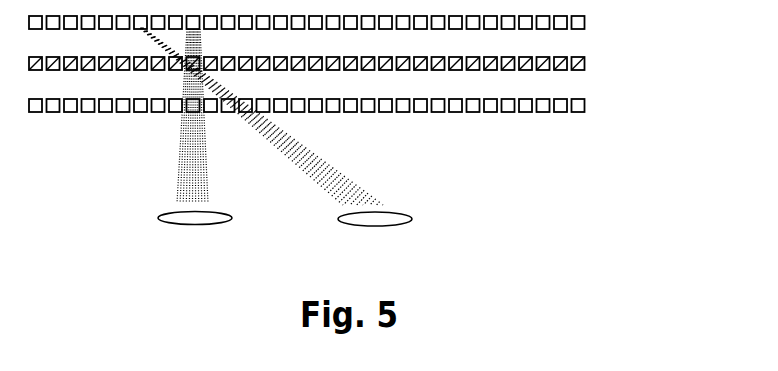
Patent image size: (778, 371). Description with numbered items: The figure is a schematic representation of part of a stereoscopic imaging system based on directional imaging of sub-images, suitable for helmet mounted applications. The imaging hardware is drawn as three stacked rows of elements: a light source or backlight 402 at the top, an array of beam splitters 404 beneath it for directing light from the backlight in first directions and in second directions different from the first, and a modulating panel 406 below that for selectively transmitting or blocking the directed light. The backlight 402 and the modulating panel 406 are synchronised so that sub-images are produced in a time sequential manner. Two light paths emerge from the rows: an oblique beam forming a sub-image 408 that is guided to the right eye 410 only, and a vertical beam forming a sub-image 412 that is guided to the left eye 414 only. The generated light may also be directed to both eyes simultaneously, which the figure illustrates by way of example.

The light source or backlight 402 is at (584, 27).
The array of beam splitters 404 is at (584, 67).
The modulating panel 406 is at (584, 109).
The sub-image for the right eye 408 is at (312, 153).
The right eye 410 is at (370, 217).
The sub-image for the left eye 412 is at (187, 170).
The left eye 414 is at (205, 223).